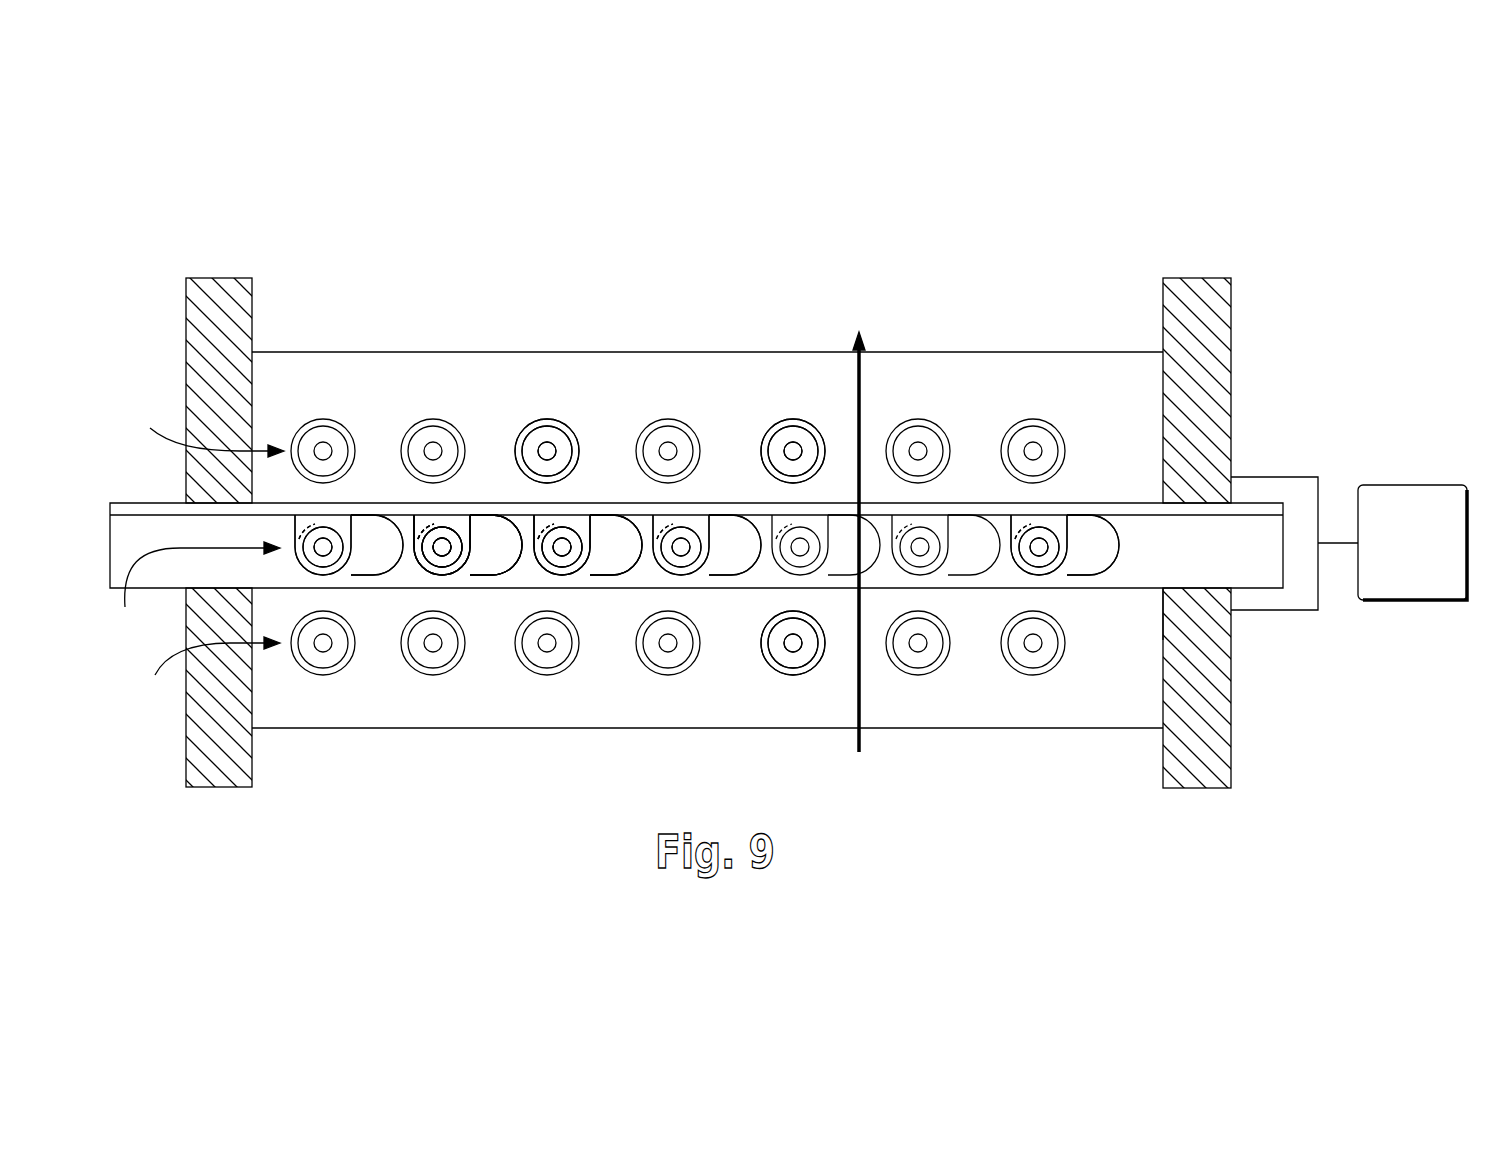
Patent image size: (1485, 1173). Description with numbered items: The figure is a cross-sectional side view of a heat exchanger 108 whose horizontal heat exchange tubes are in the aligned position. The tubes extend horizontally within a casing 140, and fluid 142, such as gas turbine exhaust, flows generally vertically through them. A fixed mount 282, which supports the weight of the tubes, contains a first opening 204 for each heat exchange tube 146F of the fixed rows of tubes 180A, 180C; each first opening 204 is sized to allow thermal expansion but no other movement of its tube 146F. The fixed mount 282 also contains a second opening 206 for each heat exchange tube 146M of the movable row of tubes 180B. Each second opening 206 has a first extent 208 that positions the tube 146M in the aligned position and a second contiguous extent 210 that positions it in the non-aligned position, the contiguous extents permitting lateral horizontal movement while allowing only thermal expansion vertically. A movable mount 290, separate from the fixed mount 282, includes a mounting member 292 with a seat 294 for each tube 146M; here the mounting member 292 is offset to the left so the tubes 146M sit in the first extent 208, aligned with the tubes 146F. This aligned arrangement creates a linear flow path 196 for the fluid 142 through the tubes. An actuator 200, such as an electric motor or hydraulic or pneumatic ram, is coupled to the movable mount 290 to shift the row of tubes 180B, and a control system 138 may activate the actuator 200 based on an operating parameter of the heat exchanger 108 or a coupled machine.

The heat exchanger 108 is at (190, 256).
The casing 140 is at (218, 313).
The heat exchange tube in fixed row 146F is at (427, 445).
The heat exchange tube in movable row 146M is at (443, 545).
The first opening 204 is at (557, 432).
The second contiguous extent 210 is at (495, 540).
The second opening 206 is at (489, 594).
The first extent 208 is at (425, 575).
The seat 294 is at (337, 572).
The fixed mount 282 is at (1018, 366).
The movable mount 290 is at (1255, 487).
The actuator 200 is at (1313, 588).
The mounting member 292 is at (1122, 505).
The control system 138 is at (1392, 589).
The linear flow path 196 is at (912, 578).
The fluid 142 is at (862, 740).
The fixed row of tubes 180A is at (192, 428).
The movable row of tubes 180B is at (190, 592).
The fixed row of tubes 180C is at (194, 671).